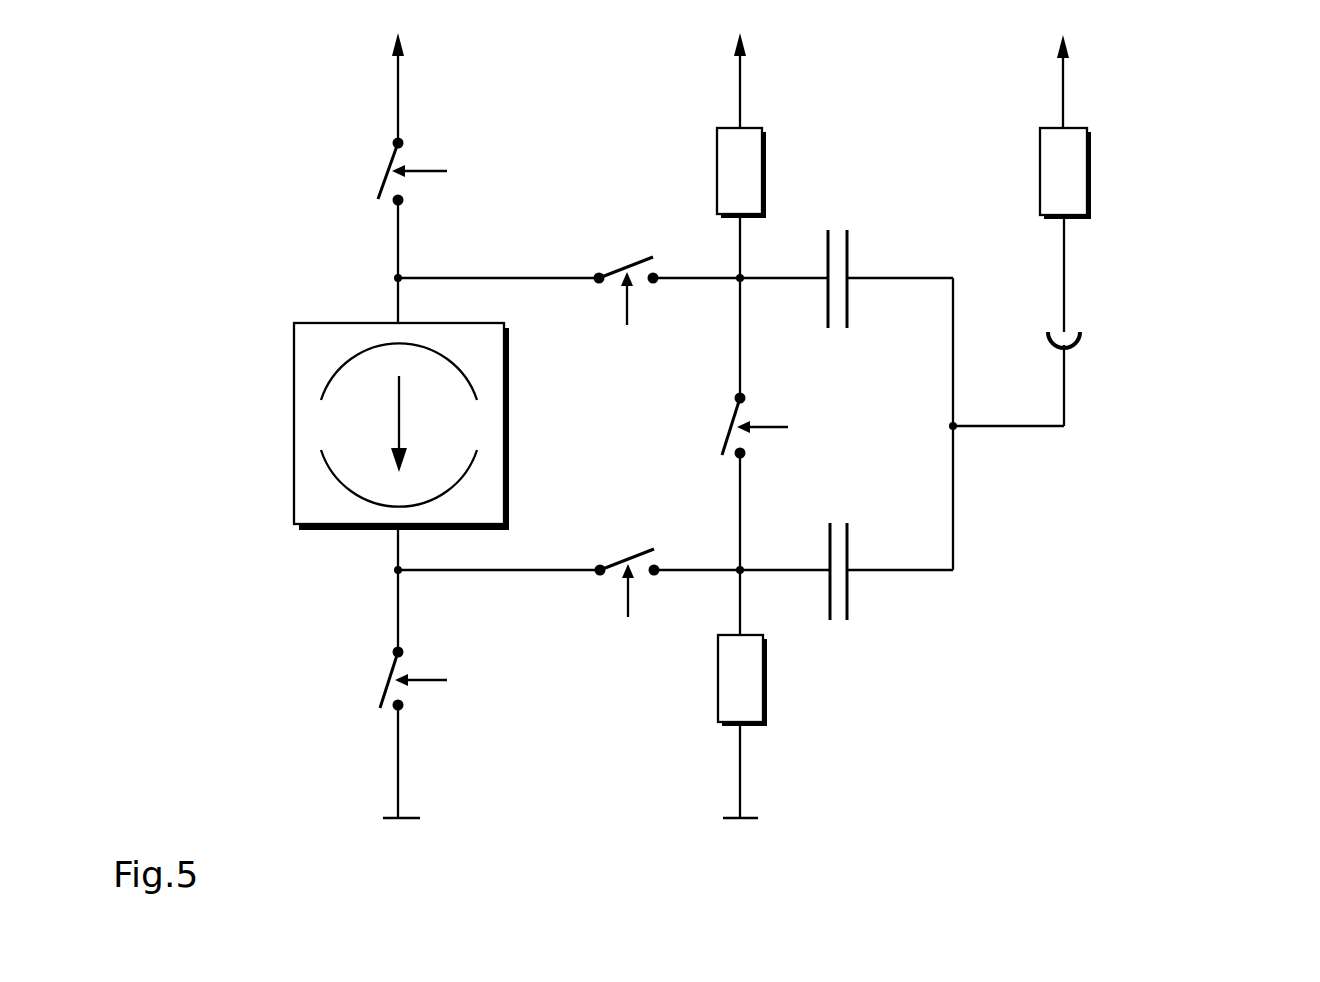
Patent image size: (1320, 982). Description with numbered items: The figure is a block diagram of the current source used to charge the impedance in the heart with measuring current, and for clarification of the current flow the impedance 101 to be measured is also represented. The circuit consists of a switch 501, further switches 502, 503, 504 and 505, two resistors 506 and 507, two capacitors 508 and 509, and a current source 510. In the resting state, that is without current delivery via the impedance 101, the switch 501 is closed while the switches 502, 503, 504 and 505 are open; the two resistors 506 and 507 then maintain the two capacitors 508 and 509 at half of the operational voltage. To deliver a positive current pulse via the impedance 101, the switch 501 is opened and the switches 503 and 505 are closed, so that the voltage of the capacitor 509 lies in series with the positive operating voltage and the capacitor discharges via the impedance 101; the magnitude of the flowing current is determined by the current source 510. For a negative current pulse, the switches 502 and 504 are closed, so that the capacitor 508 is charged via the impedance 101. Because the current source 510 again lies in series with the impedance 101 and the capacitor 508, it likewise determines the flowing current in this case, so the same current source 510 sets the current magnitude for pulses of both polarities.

The impedance 101 is at (1090, 150).
The switch 501 is at (722, 438).
The switch 502 is at (640, 258).
The switch 503 is at (616, 575).
The switch 504 is at (387, 690).
The switch 505 is at (382, 183).
The resistor 506 is at (765, 682).
The resistor 507 is at (717, 168).
The capacitor 508 is at (850, 251).
The capacitor 509 is at (850, 592).
The current source 510 is at (340, 530).